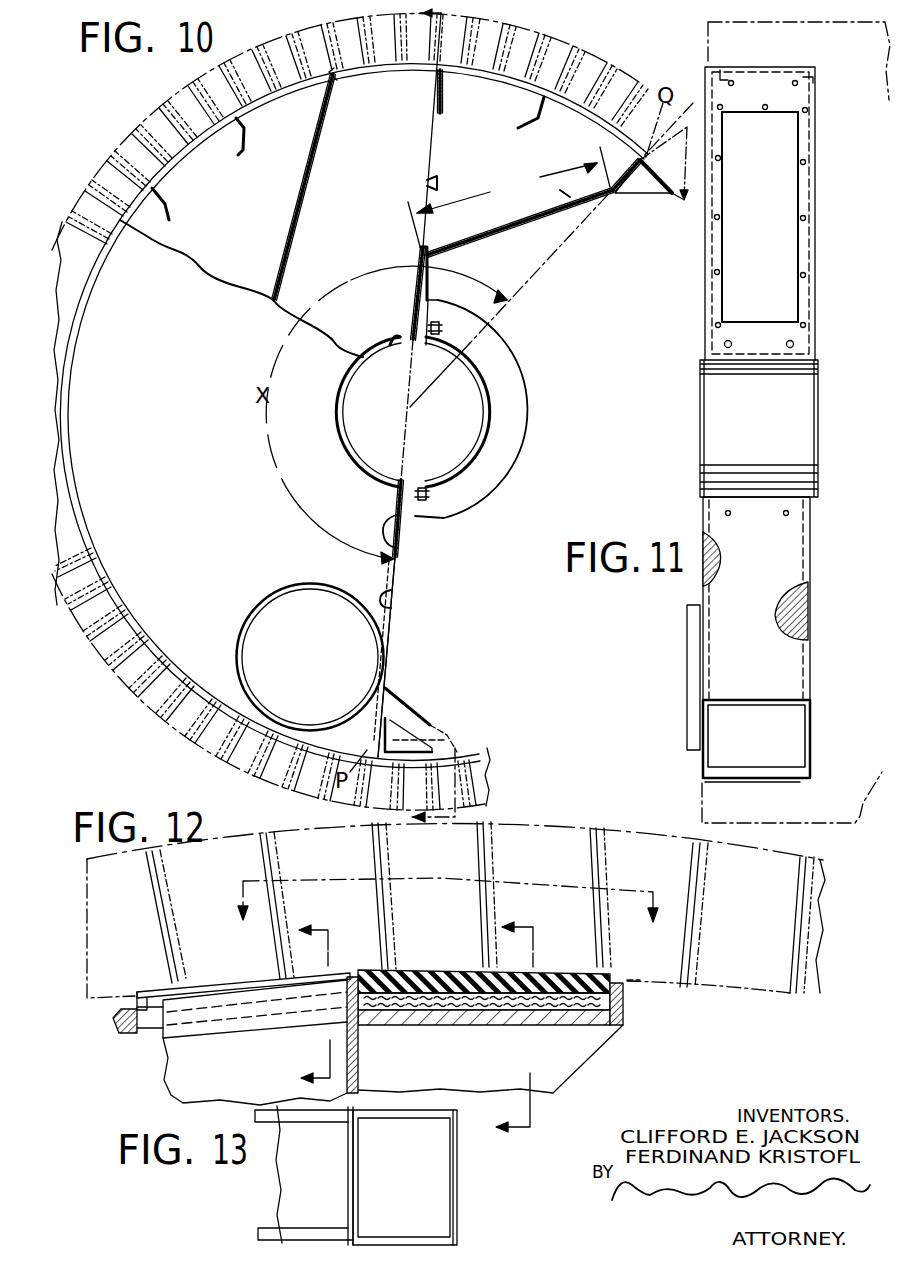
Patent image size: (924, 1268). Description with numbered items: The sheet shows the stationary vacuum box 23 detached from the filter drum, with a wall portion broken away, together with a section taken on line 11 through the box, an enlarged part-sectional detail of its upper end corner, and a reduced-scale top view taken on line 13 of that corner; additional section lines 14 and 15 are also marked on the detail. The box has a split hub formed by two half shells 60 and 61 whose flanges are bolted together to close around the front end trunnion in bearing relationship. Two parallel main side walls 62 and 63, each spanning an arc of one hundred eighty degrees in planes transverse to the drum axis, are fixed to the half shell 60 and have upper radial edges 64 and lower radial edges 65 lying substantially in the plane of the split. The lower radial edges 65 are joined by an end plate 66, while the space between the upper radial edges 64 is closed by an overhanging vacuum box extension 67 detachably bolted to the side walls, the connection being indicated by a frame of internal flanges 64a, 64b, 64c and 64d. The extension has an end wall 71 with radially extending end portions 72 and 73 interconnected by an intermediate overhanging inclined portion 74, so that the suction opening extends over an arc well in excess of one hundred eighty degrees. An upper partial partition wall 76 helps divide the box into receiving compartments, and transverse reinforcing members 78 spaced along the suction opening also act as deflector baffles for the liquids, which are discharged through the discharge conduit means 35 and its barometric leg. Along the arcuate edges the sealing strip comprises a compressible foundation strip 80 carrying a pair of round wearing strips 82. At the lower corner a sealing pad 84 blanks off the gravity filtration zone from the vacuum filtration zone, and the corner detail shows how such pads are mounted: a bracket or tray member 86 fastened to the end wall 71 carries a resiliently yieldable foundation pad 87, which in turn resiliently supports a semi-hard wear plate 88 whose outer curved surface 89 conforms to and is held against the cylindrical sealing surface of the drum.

In FIG. 10, the section line 11— 11 is at (431, 420).
In FIG. 10, the vacuum box 23 is at (405, 574).
In FIG. 11, the vacuum box 23 is at (698, 597).
In FIG. 12, the vacuum box 23 is at (177, 1067).
In FIG. 13, the vacuum box 23 is at (300, 1188).
In FIG. 10, the second discharge conduit means 35 is at (245, 620).
In FIG. 11, the second discharge conduit means 35 is at (696, 750).
In FIG. 10, the half shell 60 is at (388, 350).
In FIG. 10, the half shell 61 is at (492, 423).
In FIG. 10, the main side wall 62 is at (200, 283).
In FIG. 11, the main side wall 62 is at (718, 560).
In FIG. 11, the main side wall 63 is at (795, 612).
In FIG. 10, the upper radial edges 64 is at (432, 185).
In FIG. 11, the internal flange 64a is at (717, 182).
In FIG. 11, the internal flange 64b is at (803, 208).
In FIG. 11, the internal flange 64c is at (748, 333).
In FIG. 11, the internal flange 64d is at (750, 90).
In FIG. 10, the lower radial edges 65 is at (392, 604).
In FIG. 10, the end plate 66 is at (384, 516).
In FIG. 10, the vacuum box extension 67 is at (562, 196).
In FIG. 10, the end wall 71 is at (534, 217).
In FIG. 12, the end wall 71 is at (347, 1090).
In FIG. 10, the radially extending end portion 72 is at (432, 259).
In FIG. 10, the radially extending end portion 73 is at (591, 161).
In FIG. 10, the intermediate overhanging inclined portion 74 is at (502, 206).
In FIG. 10, the upper partial partition wall 76 is at (316, 188).
In FIG. 10, the transverse reinforcing members 78 is at (246, 146).
In FIG. 12, the foundation strip 80 is at (132, 1035).
In FIG. 12, the wearing strips 82 is at (145, 997).
In FIG. 10, the sealing pad 84 is at (437, 735).
In FIG. 11, the sealing pad 84 is at (750, 780).
In FIG. 12, the bracket or tray member 86 is at (570, 1025).
In FIG. 13, the bracket or tray member 86 is at (457, 1217).
In FIG. 12, the foundation pad 87 is at (508, 1006).
In FIG. 12, the wear plate 88 is at (548, 977).
In FIG. 13, the wear plate 88 is at (430, 1195).
In FIG. 12, the outer curved surface 89 is at (434, 971).
In FIG. 12, the section line 13— 13 is at (449, 915).
In FIG. 12, the section line 14- 14 is at (512, 1043).
In FIG. 12, the section line 15- 15 is at (305, 1004).